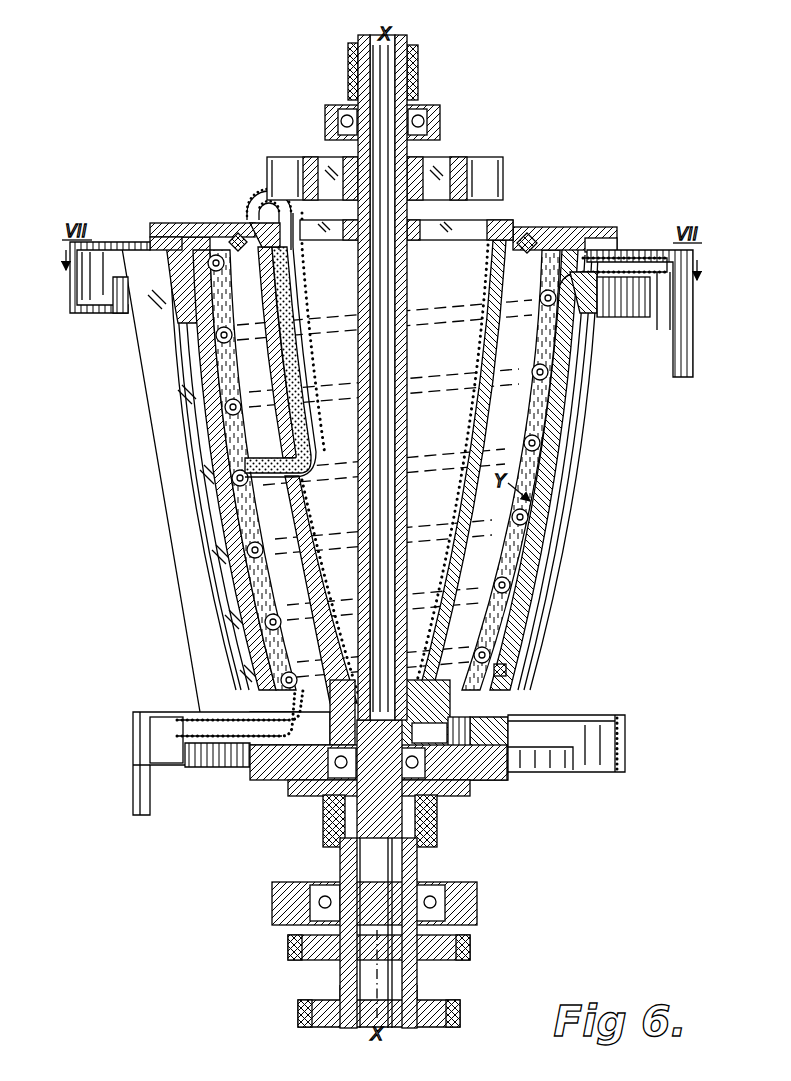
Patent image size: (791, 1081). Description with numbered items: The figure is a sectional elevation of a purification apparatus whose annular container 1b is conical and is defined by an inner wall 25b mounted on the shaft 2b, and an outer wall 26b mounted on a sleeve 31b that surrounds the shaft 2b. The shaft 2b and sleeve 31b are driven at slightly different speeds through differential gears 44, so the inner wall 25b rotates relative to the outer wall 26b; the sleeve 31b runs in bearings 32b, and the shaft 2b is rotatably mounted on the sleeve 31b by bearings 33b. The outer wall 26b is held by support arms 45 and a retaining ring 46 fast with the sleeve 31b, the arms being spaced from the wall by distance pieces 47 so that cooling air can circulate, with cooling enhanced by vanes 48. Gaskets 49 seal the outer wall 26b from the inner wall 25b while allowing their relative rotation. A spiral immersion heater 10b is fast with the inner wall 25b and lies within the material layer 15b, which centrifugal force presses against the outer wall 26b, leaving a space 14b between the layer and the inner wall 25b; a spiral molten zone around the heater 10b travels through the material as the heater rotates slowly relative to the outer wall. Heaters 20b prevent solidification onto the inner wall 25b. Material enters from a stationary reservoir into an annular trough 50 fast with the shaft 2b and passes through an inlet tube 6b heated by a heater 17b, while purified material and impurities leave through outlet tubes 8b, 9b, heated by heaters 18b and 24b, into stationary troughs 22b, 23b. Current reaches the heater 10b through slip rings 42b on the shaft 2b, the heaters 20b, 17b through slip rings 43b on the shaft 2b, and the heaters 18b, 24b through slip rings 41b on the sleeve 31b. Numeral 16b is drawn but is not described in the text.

The annular container 1b is at (567, 404).
The shaft 2b is at (402, 254).
The inlet tube 6b is at (298, 262).
The outlet tube 8b is at (640, 255).
The outlet tube 9b is at (182, 730).
The spiral shaped immersion heater 10b is at (552, 370).
The space 14b is at (515, 334).
The material layer 15b is at (528, 466).
The inner bowl wall 16b is at (530, 360).
The heater 17b is at (331, 458).
The heater 18b is at (604, 280).
The anti-solidification heaters 20b is at (477, 408).
The stationary trough 22b is at (92, 300).
The stationary trough 23b is at (613, 742).
The heater 24b is at (232, 740).
The inner wall 25b is at (485, 365).
The outer wall 26b is at (545, 489).
The sleeve 31b is at (413, 865).
The bearings 32b is at (445, 898).
The bearings 33b is at (326, 113).
The slip rings 41b is at (440, 835).
The slip rings 42b is at (418, 92).
The slip rings 43b is at (347, 66).
The differential gears 44 is at (460, 1000).
The support arms 45 is at (548, 546).
The retaining ring 46 is at (572, 235).
The distance pieces 47 is at (548, 521).
The vanes 48 is at (172, 428).
The gaskets 49 is at (236, 233).
The annular trough 50 is at (487, 176).